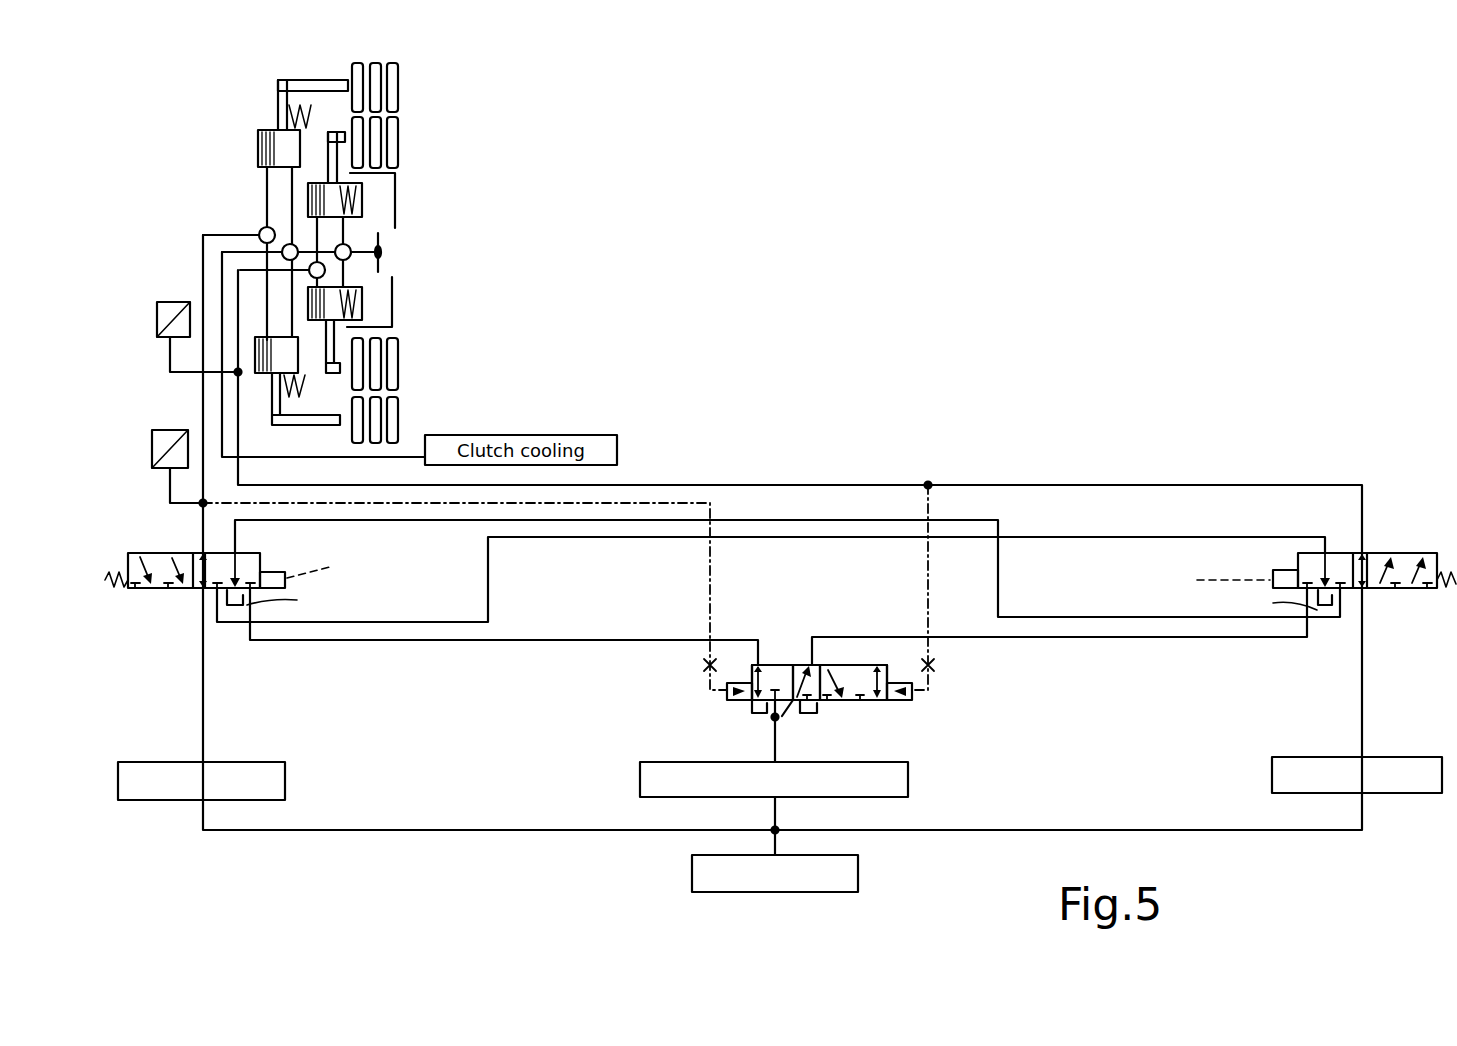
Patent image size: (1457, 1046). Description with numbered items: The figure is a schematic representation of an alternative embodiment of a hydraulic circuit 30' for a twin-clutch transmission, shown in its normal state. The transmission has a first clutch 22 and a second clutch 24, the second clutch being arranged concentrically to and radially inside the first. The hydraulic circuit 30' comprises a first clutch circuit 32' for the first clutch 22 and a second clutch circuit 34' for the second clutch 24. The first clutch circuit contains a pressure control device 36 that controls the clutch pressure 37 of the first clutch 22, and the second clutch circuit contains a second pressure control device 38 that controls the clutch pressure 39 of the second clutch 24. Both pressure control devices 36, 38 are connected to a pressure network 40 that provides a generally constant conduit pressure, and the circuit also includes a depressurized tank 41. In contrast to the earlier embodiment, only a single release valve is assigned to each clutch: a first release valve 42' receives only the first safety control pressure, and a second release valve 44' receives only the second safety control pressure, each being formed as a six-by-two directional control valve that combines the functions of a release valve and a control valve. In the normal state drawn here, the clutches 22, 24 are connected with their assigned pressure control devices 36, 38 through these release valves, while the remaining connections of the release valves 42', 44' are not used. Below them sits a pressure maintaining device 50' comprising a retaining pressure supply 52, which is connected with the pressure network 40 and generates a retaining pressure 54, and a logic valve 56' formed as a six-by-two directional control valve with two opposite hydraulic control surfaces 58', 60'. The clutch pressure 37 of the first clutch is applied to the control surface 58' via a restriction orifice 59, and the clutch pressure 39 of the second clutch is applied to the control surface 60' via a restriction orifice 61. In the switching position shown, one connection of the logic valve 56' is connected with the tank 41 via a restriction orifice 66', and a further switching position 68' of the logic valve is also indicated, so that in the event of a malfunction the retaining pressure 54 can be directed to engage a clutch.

The first clutch 22 is at (406, 100).
The second clutch 24 is at (406, 153).
The hydraulic circuit 30' is at (782, 532).
The first clutch circuit 32' is at (759, 624).
The second clutch circuit 34' is at (1098, 623).
The pressure control device 36 is at (287, 777).
The clutch pressure 37 is at (167, 482).
The second pressure control device 38 is at (1270, 773).
The clutch pressure 39 is at (170, 353).
The pressure network 40 is at (858, 868).
The depressurized tank 41 is at (813, 712).
The first release valve 42' is at (233, 549).
The second release valve 44' is at (1310, 529).
The pressure maintaining device 50' is at (609, 765).
The retaining pressure supply 52 is at (910, 777).
The retaining pressure 54 is at (772, 743).
The logic valve 56' is at (829, 629).
The control surface 58' is at (799, 642).
The restriction orifice 59 is at (705, 665).
The control surface 60' is at (956, 707).
The restriction orifice 61 is at (933, 663).
The restriction orifice 66' is at (778, 626).
The second valve position 68' is at (872, 626).